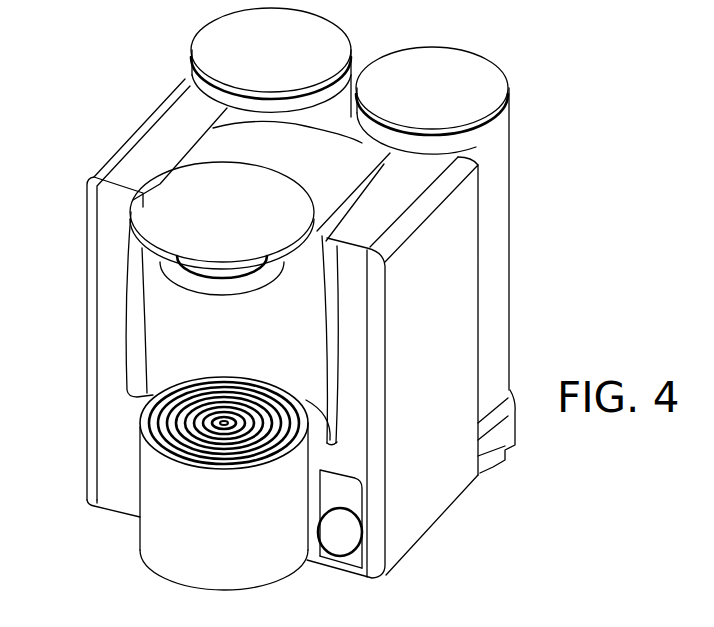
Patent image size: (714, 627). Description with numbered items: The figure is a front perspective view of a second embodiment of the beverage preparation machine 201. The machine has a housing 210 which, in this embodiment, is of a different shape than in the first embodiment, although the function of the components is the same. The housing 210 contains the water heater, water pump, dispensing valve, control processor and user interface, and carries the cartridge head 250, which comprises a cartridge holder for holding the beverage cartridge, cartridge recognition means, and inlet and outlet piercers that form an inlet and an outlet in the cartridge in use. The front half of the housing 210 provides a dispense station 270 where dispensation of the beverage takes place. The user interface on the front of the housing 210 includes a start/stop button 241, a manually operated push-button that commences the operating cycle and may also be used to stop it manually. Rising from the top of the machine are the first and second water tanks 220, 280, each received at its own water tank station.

The beverage preparation machine 201 is at (150, 589).
The housing 210 is at (440, 500).
The first water tank 220 is at (492, 141).
The start/stop button 241 is at (341, 545).
The cartridge head 250 is at (140, 257).
The dispense station 270 is at (179, 343).
The second water tank 280 is at (232, 100).